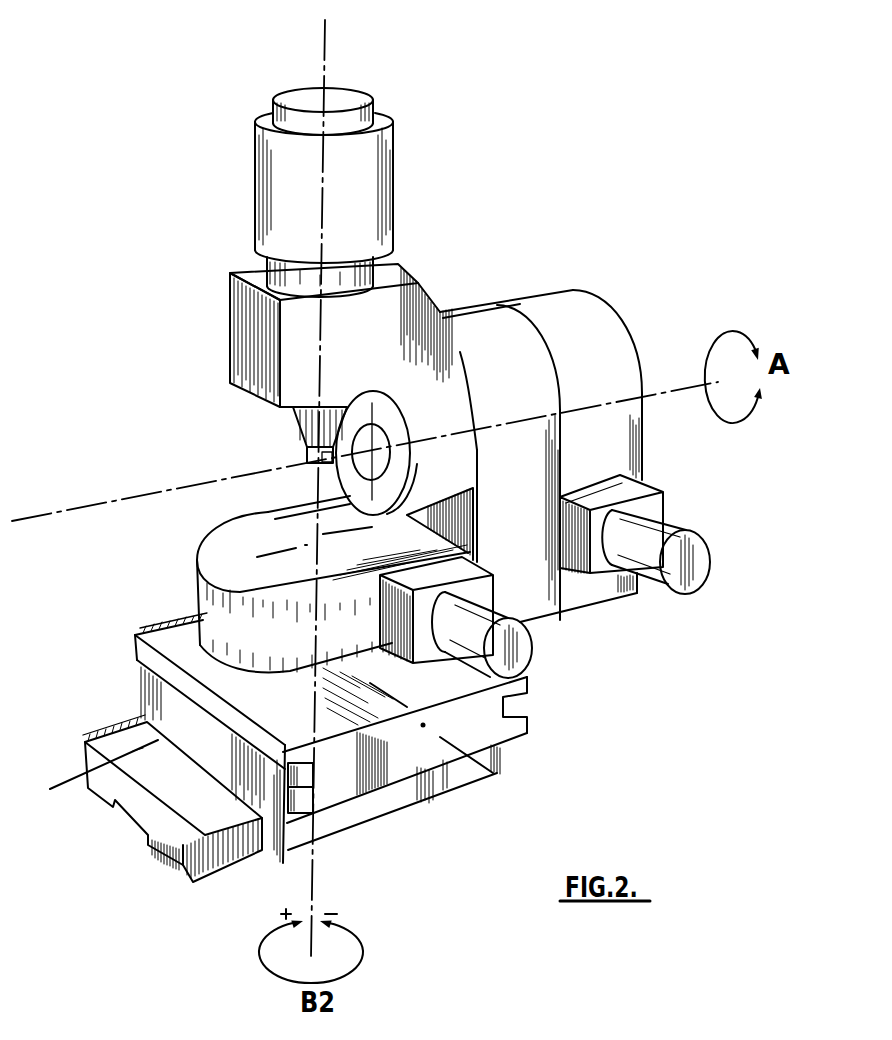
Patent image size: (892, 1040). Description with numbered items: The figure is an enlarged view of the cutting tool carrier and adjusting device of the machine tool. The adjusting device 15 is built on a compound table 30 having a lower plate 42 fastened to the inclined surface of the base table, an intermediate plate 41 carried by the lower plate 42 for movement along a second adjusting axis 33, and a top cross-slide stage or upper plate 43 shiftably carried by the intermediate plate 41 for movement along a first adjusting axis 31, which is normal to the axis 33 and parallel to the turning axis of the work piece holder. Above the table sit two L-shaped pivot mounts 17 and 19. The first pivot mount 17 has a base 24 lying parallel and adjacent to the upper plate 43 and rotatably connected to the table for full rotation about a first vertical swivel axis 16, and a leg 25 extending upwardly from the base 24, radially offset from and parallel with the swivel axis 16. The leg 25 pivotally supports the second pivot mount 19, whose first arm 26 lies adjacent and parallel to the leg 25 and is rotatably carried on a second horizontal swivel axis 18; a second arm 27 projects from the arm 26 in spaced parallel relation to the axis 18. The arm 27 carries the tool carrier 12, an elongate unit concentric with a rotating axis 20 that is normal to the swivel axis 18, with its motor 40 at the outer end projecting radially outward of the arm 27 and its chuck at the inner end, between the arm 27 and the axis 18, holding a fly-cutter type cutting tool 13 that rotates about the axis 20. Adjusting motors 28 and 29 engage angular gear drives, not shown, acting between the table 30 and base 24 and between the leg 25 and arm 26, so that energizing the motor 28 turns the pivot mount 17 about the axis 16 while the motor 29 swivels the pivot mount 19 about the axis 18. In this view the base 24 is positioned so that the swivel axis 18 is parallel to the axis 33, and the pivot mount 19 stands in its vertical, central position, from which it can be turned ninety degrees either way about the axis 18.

The tool carrier 12 is at (296, 421).
The cutting tool 13 is at (322, 456).
The adjusting device 15 is at (548, 675).
The first vertical swivel axis 16 is at (364, 489).
The first pivot mount 17 is at (188, 560).
The second horizontal swivel axis 18 is at (660, 388).
The second pivot mount 19 is at (436, 271).
The rotating axis 20 is at (324, 55).
The base of pivot mount 17 24 is at (276, 646).
The leg of pivot mount 17 25 is at (530, 525).
The first arm of pivot mount 19 26 is at (455, 482).
The second arm of pivot mount 19 27 is at (380, 327).
The adjusting motor 28 is at (480, 647).
The adjusting motor 29 is at (682, 580).
The compound table 30 is at (390, 832).
The first adjusting axis 31 is at (493, 773).
The second adjusting axis 33 is at (70, 788).
The motor 40 is at (382, 142).
The intermediate plate 41 is at (405, 740).
The lower plate 42 is at (228, 825).
The upper plate 43 is at (302, 732).